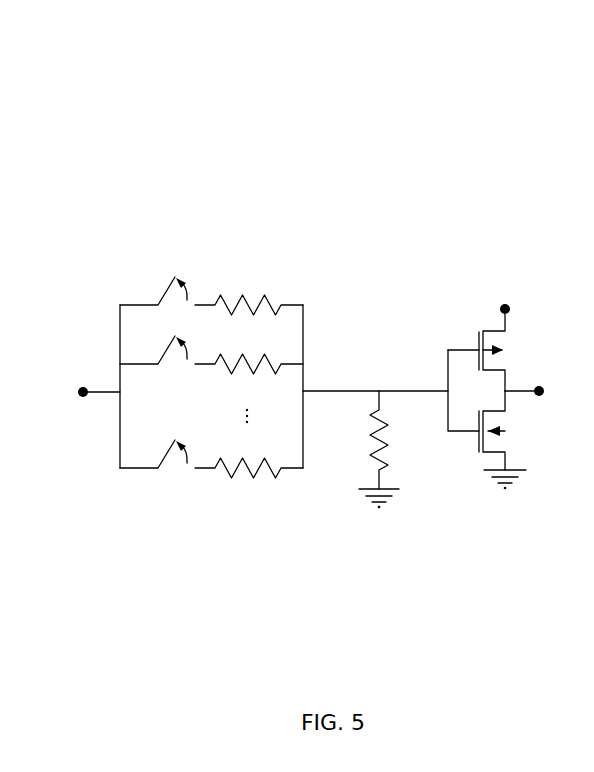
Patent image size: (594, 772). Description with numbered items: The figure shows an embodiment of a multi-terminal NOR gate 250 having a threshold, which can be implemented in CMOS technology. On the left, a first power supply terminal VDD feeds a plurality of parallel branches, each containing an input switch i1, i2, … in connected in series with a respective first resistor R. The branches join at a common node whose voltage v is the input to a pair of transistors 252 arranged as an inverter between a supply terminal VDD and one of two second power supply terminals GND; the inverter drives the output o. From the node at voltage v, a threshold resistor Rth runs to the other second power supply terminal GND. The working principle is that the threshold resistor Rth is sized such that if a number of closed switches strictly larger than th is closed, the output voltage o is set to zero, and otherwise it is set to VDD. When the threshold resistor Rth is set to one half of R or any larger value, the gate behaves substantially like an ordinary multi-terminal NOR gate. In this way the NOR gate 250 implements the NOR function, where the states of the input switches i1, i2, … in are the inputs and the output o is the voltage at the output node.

The multi-terminal NOR gate 250 is at (206, 77).
The pair of transistors 252 is at (478, 338).
The first power supply terminal VDD is at (88, 370).
The first resistor R is at (249, 387).
The threshold resistor Rth is at (400, 440).
The input switch i1 is at (153, 280).
The input switch i2 is at (153, 365).
The input switch in is at (153, 472).
The node voltage v is at (375, 376).
The output o is at (536, 391).
The second power supply terminal GND is at (442, 501).